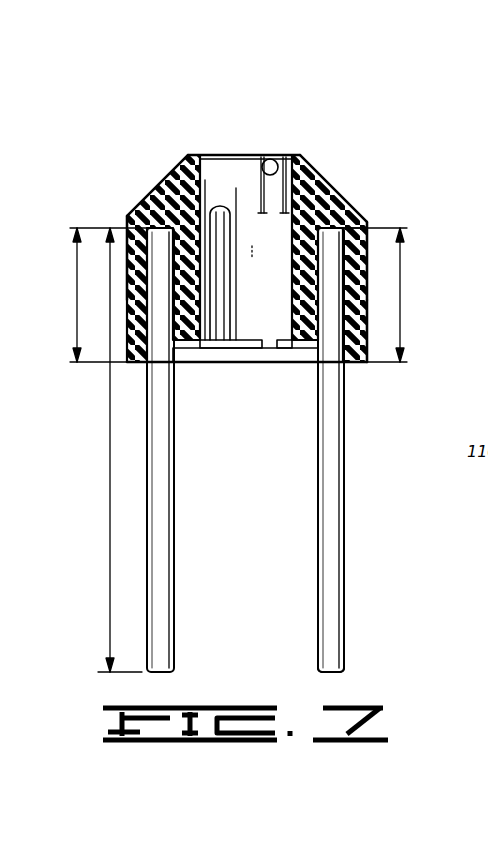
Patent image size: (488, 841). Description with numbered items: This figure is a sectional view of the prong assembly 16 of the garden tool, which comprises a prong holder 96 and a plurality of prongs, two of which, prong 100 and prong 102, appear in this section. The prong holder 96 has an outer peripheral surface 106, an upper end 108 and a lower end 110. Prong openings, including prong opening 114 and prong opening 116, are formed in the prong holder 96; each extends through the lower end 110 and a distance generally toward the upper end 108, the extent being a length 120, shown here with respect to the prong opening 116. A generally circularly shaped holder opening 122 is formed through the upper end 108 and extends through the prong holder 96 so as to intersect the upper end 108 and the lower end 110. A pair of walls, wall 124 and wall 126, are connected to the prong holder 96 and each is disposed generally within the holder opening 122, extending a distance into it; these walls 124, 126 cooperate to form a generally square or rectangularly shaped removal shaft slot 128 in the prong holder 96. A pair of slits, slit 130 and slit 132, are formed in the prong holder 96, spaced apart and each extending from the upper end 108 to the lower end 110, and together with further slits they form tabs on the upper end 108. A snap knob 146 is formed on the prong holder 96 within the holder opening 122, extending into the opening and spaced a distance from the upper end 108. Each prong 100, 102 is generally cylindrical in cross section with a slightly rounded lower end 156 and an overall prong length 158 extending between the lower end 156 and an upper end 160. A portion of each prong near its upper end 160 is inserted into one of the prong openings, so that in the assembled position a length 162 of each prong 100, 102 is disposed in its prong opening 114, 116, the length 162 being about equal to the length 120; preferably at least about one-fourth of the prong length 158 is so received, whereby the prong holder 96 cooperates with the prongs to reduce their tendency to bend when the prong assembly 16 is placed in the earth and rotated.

The prong assembly 16 is at (372, 275).
The prong holder 96 is at (127, 308).
The prong 100 is at (175, 478).
The prong 102 is at (344, 418).
The outer peripheral surface 106 is at (365, 352).
The upper end 108 is at (297, 155).
The lower end 110 is at (353, 363).
The prong opening 114 is at (136, 208).
The prong opening 116 is at (364, 222).
The length 120 is at (402, 297).
The holder opening 122 is at (213, 157).
The wall 124 is at (212, 348).
The wall 126 is at (282, 348).
The removal shaft slot 128 is at (243, 340).
The slit 130 is at (250, 157).
The slit 132 is at (302, 174).
The snap knob 146 is at (272, 158).
The lower end 156 is at (341, 672).
The prong length 158 is at (110, 439).
The upper end 160 is at (152, 226).
The length 162 is at (77, 268).